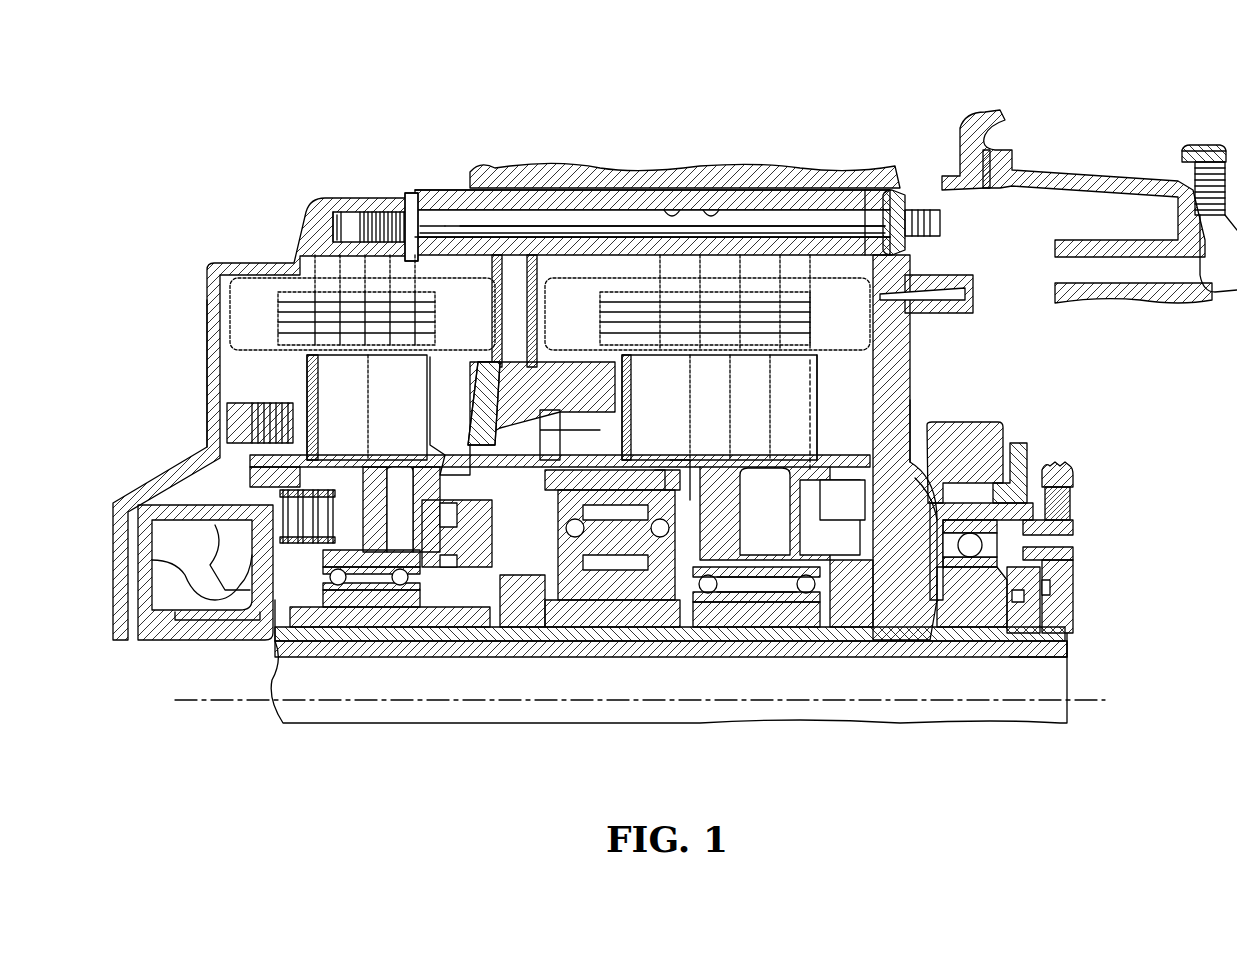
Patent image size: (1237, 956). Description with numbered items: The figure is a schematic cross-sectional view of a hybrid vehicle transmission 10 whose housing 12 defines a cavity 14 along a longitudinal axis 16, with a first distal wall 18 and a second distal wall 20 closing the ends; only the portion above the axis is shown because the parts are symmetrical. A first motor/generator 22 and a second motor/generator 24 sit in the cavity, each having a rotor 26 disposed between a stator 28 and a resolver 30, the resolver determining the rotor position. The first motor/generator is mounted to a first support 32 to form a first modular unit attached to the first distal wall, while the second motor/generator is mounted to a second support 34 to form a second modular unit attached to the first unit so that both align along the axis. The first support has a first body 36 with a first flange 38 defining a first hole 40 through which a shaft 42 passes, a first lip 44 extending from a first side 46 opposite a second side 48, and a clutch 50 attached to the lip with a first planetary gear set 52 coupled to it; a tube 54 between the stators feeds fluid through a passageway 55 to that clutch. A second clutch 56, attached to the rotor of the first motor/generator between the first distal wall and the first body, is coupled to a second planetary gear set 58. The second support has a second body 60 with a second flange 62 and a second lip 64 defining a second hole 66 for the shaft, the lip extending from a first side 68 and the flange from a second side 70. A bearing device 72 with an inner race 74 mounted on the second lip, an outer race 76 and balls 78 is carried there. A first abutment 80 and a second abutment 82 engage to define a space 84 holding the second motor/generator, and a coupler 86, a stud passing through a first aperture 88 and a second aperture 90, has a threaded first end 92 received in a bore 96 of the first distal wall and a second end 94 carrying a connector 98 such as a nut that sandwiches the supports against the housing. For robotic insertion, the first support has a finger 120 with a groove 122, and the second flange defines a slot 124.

The transmission 10 is at (365, 100).
The housing 12 is at (655, 170).
The cavity 14 is at (178, 660).
The longitudinal axis 16 is at (1085, 703).
The first distal wall 18 is at (358, 205).
The second distal wall 20 is at (1195, 182).
The first motor/generator 22 is at (240, 380).
The second motor/generator 24 is at (855, 368).
The rotor 26 is at (298, 390).
The stator 28 is at (420, 274).
The resolver 30 is at (430, 520).
The first support 32 is at (518, 185).
The second support 34 is at (897, 580).
The first body 36 is at (470, 450).
The first flange 38 is at (370, 602).
The first hole 40 is at (268, 640).
The shaft 42 is at (1070, 645).
The first lip 44 is at (600, 385).
The first side 46 is at (605, 470).
The second side 48 is at (440, 540).
The clutch 50 is at (620, 420).
The first planetary gear set 52 is at (665, 478).
The tube 54 is at (540, 268).
The passageway 55 is at (503, 385).
The second clutch 56 is at (338, 510).
The second planetary gear set 58 is at (1078, 472).
The second body 60 is at (900, 405).
The second flange 62 is at (762, 606).
The second lip 64 is at (1020, 633).
The second hole 66 is at (748, 625).
The first side 68 is at (930, 425).
The second side 70 is at (870, 380).
The bearing device 72 is at (1002, 545).
The inner race 74 is at (990, 590).
The outer race 76 is at (1058, 516).
The balls 78 is at (958, 575).
The first abutment 80 is at (593, 200).
The second abutment 82 is at (740, 200).
The space 84 is at (856, 253).
The coupler 86 is at (767, 220).
The first aperture 88 is at (673, 212).
The second aperture 90 is at (712, 212).
The first end 92 is at (390, 210).
The second end 94 is at (925, 210).
The bore 96 is at (336, 210).
The connector 98 is at (905, 198).
The finger 120 is at (562, 600).
The groove 122 is at (535, 580).
The slot 124 is at (845, 625).